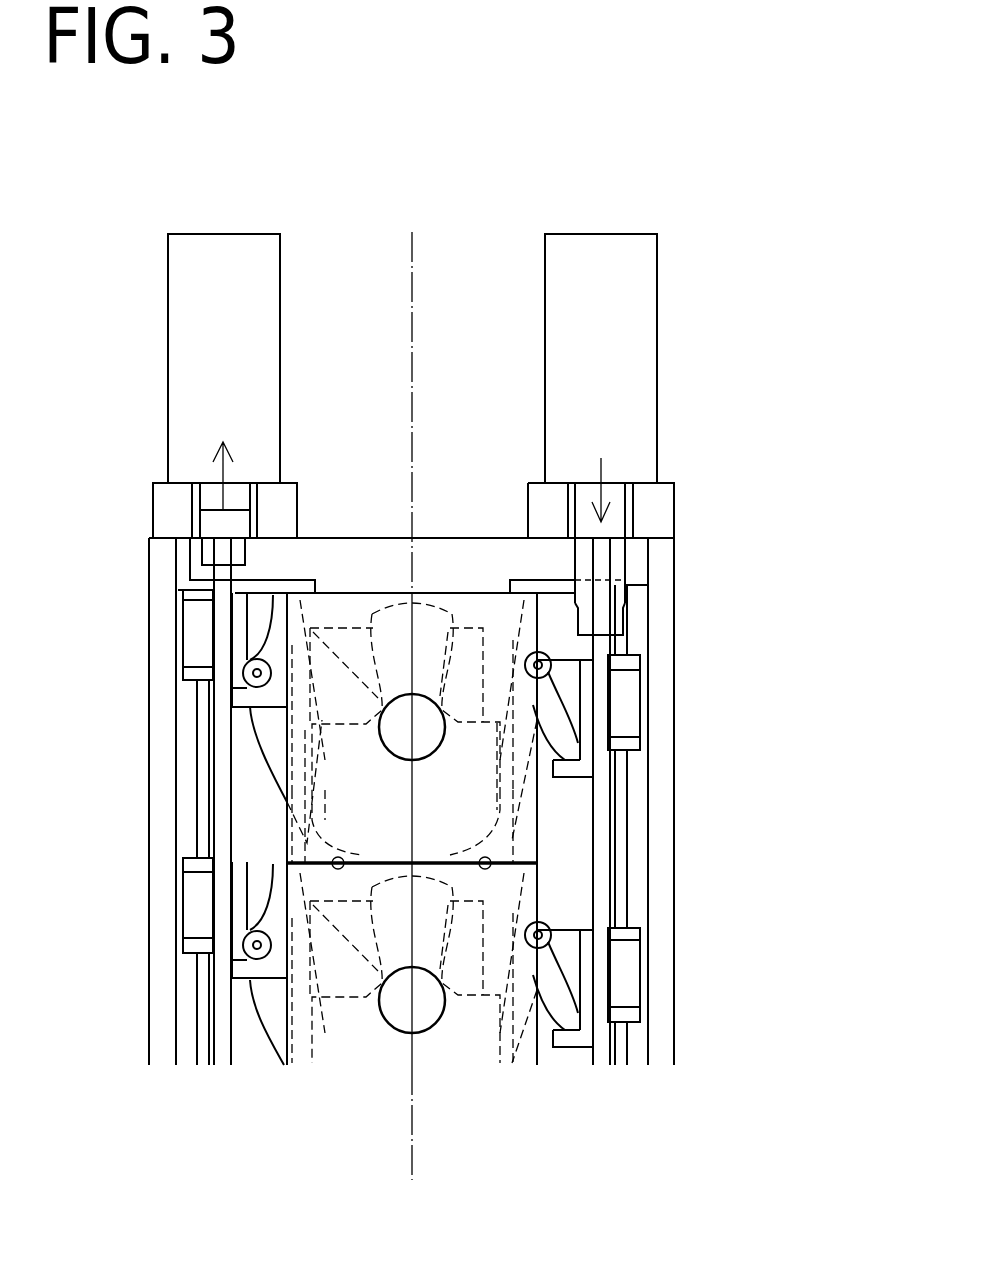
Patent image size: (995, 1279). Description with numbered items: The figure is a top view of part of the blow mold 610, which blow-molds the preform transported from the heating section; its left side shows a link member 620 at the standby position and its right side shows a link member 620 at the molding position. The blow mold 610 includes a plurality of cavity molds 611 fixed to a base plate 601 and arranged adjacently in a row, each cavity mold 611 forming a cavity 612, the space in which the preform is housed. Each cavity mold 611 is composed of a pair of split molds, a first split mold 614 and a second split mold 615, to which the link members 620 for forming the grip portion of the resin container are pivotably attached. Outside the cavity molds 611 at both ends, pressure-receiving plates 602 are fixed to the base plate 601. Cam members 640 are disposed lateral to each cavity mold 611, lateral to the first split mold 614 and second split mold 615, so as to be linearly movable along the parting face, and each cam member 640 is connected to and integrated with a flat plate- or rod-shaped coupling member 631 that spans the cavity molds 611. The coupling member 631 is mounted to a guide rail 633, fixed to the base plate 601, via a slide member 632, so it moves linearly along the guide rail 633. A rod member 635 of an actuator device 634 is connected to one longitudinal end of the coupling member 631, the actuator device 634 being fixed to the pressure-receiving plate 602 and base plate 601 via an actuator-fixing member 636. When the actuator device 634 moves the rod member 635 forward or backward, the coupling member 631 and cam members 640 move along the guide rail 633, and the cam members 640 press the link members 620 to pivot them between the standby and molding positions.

The blow mold 610 is at (618, 142).
The base plate 601 is at (162, 570).
The pressure-receiving plate 602 is at (380, 562).
The cavity mold 611 is at (451, 501).
The cavity 612 is at (447, 802).
The first split mold 614 is at (358, 605).
The second split mold 615 is at (490, 605).
The link member 620 is at (258, 752).
The coupling member 631 is at (222, 840).
The slide member 632 is at (193, 628).
The guide rail 633 is at (185, 720).
The actuator device 634 is at (172, 332).
The rod member 635 is at (215, 494).
The actuator-fixing member 636 is at (168, 525).
The cam member 640 is at (279, 570).